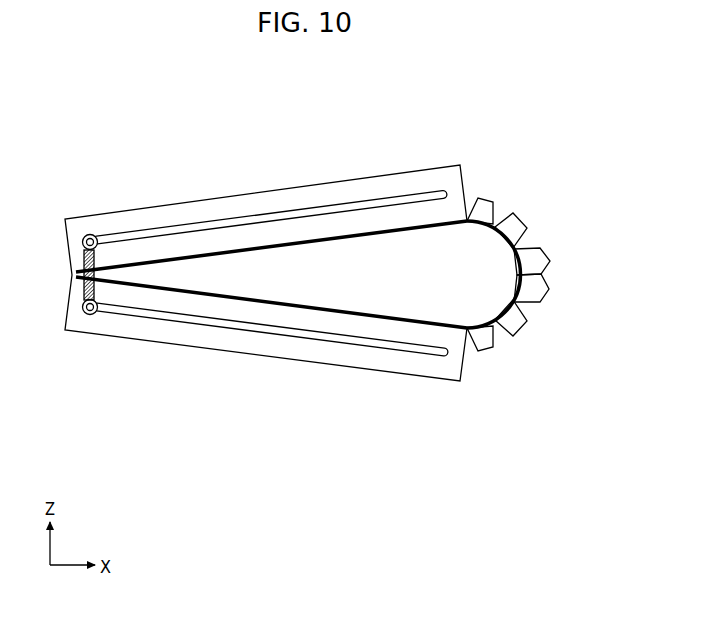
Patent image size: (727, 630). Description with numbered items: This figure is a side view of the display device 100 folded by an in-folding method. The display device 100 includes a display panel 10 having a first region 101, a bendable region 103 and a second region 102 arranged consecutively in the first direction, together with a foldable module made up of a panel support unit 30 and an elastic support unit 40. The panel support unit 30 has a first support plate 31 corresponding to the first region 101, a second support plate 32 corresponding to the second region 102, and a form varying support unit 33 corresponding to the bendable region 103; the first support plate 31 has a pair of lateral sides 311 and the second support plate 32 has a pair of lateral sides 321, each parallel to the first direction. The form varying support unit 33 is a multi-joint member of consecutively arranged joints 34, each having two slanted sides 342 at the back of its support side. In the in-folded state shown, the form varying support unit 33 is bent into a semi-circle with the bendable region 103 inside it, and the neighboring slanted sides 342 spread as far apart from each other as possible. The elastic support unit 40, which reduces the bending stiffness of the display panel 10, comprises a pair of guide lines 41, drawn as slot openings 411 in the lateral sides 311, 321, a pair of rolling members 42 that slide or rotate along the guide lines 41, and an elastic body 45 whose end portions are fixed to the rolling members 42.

The display device 100 is at (325, 95).
The display panel 10 is at (286, 299).
The first region 101 is at (358, 311).
The second region 102 is at (410, 232).
The bendable region 103 is at (515, 265).
The panel support unit 30 is at (235, 522).
The first support plate 31 is at (64, 303).
The sides 311 is at (242, 342).
The second support plate 32 is at (64, 239).
The sides 321 is at (203, 214).
The form varying support unit 33 is at (526, 336).
The joints 34 is at (549, 264).
The slanted sides 342 is at (520, 224).
The elastic support unit 40 is at (327, 522).
The guide lines 41 is at (270, 277).
The guide slot 411 is at (318, 212).
The rolling members 42 is at (88, 232).
The elastic body 45 is at (84, 266).